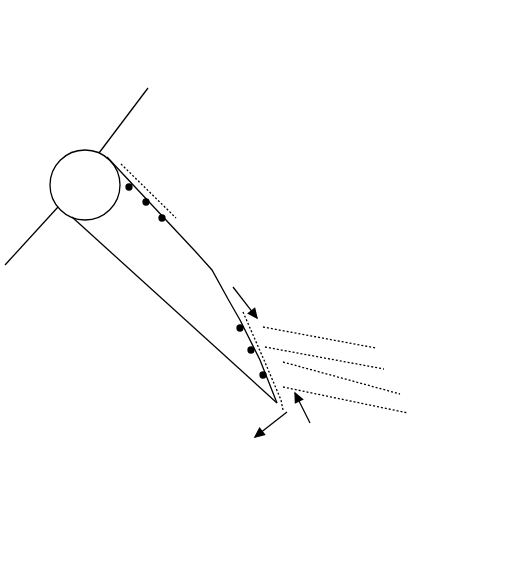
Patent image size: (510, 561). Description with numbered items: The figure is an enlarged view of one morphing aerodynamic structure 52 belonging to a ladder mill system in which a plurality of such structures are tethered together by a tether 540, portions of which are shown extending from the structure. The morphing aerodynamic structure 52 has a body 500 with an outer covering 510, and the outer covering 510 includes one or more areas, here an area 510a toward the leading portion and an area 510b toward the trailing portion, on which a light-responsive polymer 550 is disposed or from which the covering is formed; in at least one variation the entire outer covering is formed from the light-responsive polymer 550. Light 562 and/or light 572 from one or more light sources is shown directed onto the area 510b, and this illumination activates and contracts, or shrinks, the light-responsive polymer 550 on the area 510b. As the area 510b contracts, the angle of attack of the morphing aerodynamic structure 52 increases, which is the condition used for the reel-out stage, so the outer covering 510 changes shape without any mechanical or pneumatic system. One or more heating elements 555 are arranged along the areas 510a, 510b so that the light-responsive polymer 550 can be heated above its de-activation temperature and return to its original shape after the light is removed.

The morphing aerodynamic structure 52 is at (281, 149).
The body 500 is at (204, 276).
The outer covering 510 is at (233, 280).
The area 510a is at (180, 222).
The area 510b is at (268, 337).
The tether 540 is at (128, 110).
The light-responsive polymer 550 is at (152, 182).
The heating element 555 is at (145, 205).
The light 562 is at (388, 362).
The light 572 is at (357, 362).